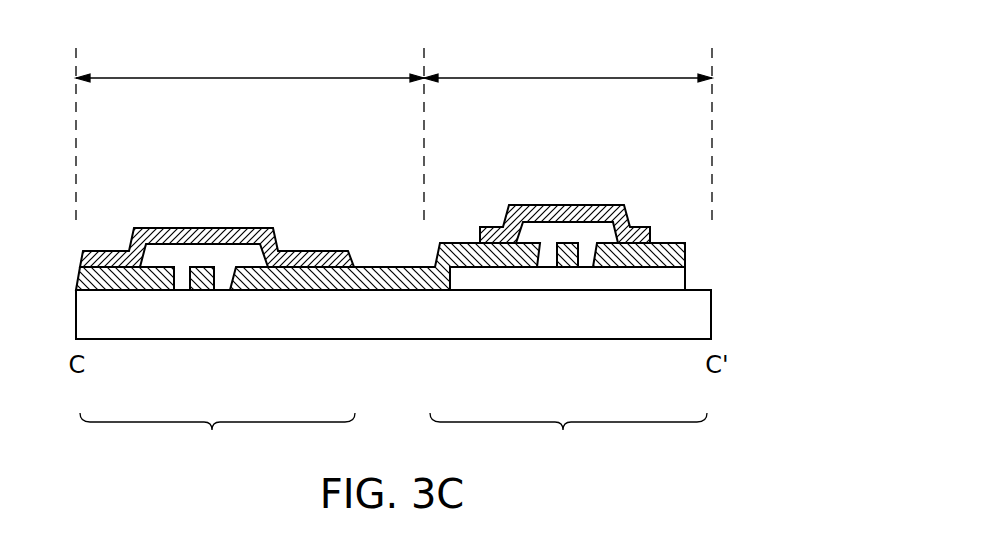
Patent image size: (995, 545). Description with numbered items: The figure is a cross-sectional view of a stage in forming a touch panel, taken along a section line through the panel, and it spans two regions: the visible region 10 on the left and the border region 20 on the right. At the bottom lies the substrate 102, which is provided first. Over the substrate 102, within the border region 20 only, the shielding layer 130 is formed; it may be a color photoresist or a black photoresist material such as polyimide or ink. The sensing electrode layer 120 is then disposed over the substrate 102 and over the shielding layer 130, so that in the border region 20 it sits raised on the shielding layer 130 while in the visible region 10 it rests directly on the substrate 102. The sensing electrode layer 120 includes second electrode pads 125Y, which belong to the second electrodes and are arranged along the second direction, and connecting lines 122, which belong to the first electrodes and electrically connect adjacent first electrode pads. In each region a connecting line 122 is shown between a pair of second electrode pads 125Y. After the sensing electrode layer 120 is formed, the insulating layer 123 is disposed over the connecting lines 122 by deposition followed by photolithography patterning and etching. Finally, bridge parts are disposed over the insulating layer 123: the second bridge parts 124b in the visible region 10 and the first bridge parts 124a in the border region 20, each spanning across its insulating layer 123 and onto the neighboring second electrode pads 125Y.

The visible region 10 is at (250, 78).
The border region 20 is at (567, 78).
The substrate 102 is at (700, 318).
The shielding layer 130 is at (672, 277).
The sensing electrode layer 120 is at (393, 440).
The connecting lines 122 is at (200, 290).
The second electrode pads 125Y is at (100, 290).
The insulating layer 123 is at (245, 253).
The first bridge parts 124a is at (517, 205).
The second bridge parts 124b is at (158, 228).